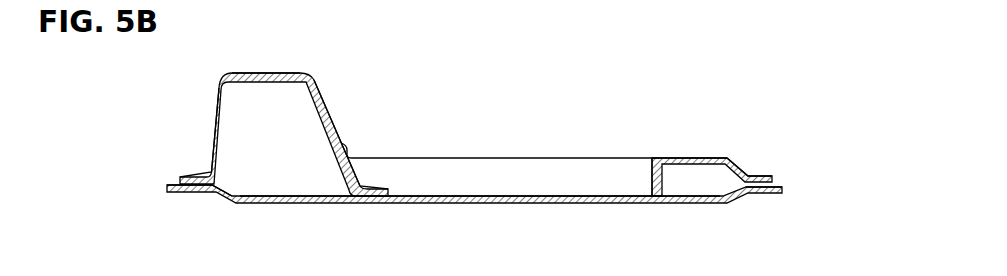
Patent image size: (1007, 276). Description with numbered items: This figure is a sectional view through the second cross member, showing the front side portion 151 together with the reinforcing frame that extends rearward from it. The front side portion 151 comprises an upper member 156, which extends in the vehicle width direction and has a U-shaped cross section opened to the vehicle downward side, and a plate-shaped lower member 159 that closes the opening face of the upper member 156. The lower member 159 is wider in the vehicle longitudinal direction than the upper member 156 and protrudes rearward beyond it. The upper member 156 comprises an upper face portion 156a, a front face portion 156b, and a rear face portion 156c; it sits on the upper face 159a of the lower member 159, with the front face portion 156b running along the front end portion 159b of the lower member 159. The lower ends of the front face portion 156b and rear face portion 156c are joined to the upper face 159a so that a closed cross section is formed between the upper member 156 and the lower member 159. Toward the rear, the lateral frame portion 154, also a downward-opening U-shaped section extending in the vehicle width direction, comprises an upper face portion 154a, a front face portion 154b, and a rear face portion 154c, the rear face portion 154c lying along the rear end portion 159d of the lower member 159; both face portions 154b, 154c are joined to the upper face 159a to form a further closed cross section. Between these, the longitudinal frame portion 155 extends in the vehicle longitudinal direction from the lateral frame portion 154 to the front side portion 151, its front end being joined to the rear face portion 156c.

The front side portion 151 is at (211, 74).
The lateral frame portion 154 is at (707, 158).
The upper face portion 154a is at (680, 156).
The front face portion 154b is at (652, 178).
The rear face portion 154c is at (737, 160).
The longitudinal frame portion 155 is at (509, 158).
The upper member 156 is at (265, 72).
The upper face portion 156a is at (291, 72).
The front face portion 156b is at (209, 122).
The rear face portion 156c is at (322, 96).
The lower member 159 is at (497, 205).
The upper face 159a is at (548, 195).
The front end portion 159b is at (160, 186).
The rear end portion 159d is at (783, 190).